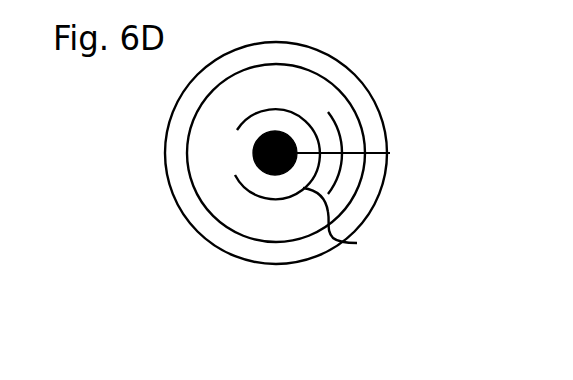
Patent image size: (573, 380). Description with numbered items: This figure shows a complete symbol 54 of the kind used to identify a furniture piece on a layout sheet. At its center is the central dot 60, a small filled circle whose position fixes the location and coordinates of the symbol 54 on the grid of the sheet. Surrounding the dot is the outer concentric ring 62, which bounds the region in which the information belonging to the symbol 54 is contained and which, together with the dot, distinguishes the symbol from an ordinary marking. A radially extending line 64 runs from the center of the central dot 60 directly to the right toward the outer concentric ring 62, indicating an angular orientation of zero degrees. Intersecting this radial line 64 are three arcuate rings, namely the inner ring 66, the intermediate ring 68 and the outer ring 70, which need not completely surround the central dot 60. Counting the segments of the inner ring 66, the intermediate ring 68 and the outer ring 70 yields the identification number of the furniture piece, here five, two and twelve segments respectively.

The symbol 54 is at (253, 35).
The central dot 60 is at (283, 132).
The outer concentric ring 62 is at (372, 87).
The radially extending line 64 is at (381, 153).
The inner ring 66 is at (311, 183).
The intermediate ring 68 is at (340, 181).
The outer ring 70 is at (307, 243).